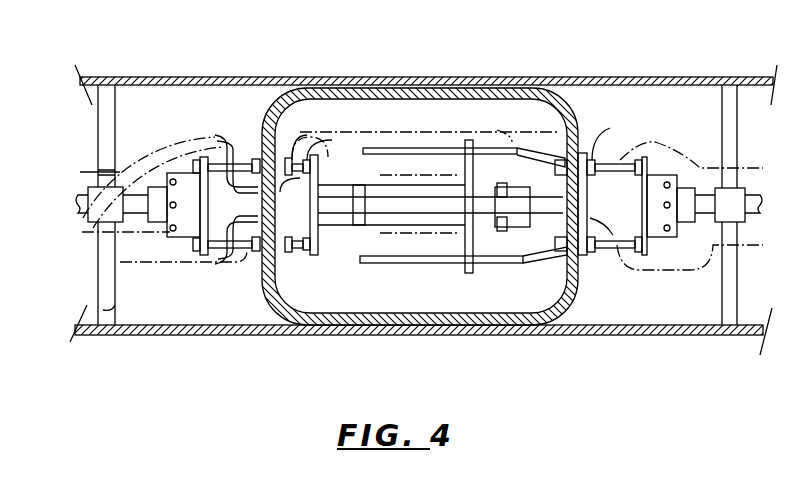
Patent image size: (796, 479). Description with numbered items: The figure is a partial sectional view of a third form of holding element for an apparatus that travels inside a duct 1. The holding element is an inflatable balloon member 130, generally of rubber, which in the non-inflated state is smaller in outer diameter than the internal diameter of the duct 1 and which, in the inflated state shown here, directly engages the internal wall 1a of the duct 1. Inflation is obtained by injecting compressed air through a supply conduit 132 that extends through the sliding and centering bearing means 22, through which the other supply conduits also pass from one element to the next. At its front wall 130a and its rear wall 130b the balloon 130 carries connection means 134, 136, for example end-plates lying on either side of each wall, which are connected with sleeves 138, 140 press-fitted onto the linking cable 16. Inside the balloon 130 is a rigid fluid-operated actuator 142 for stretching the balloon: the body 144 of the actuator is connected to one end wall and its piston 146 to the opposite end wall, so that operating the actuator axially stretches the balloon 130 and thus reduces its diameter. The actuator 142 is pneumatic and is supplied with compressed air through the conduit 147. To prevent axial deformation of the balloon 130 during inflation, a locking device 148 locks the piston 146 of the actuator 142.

The duct 1 is at (309, 337).
The internal wall 1a is at (618, 318).
The linking cable 16 is at (80, 207).
The sliding and centering bearing means 22 is at (118, 318).
The inflatable balloon member 130 is at (301, 113).
The front wall 130a is at (577, 138).
The rear wall 130b is at (265, 165).
The supply conduit 132 is at (253, 300).
The connection means 134 is at (592, 135).
The connection means 136 is at (258, 152).
The sleeve 138 is at (655, 225).
The sleeve 140 is at (180, 240).
The rigid fluid-operated actuator 142 is at (337, 250).
The actuator body 144 is at (453, 152).
The piston 146 is at (443, 203).
The conduit 147 is at (330, 195).
The locking device 148 is at (512, 218).